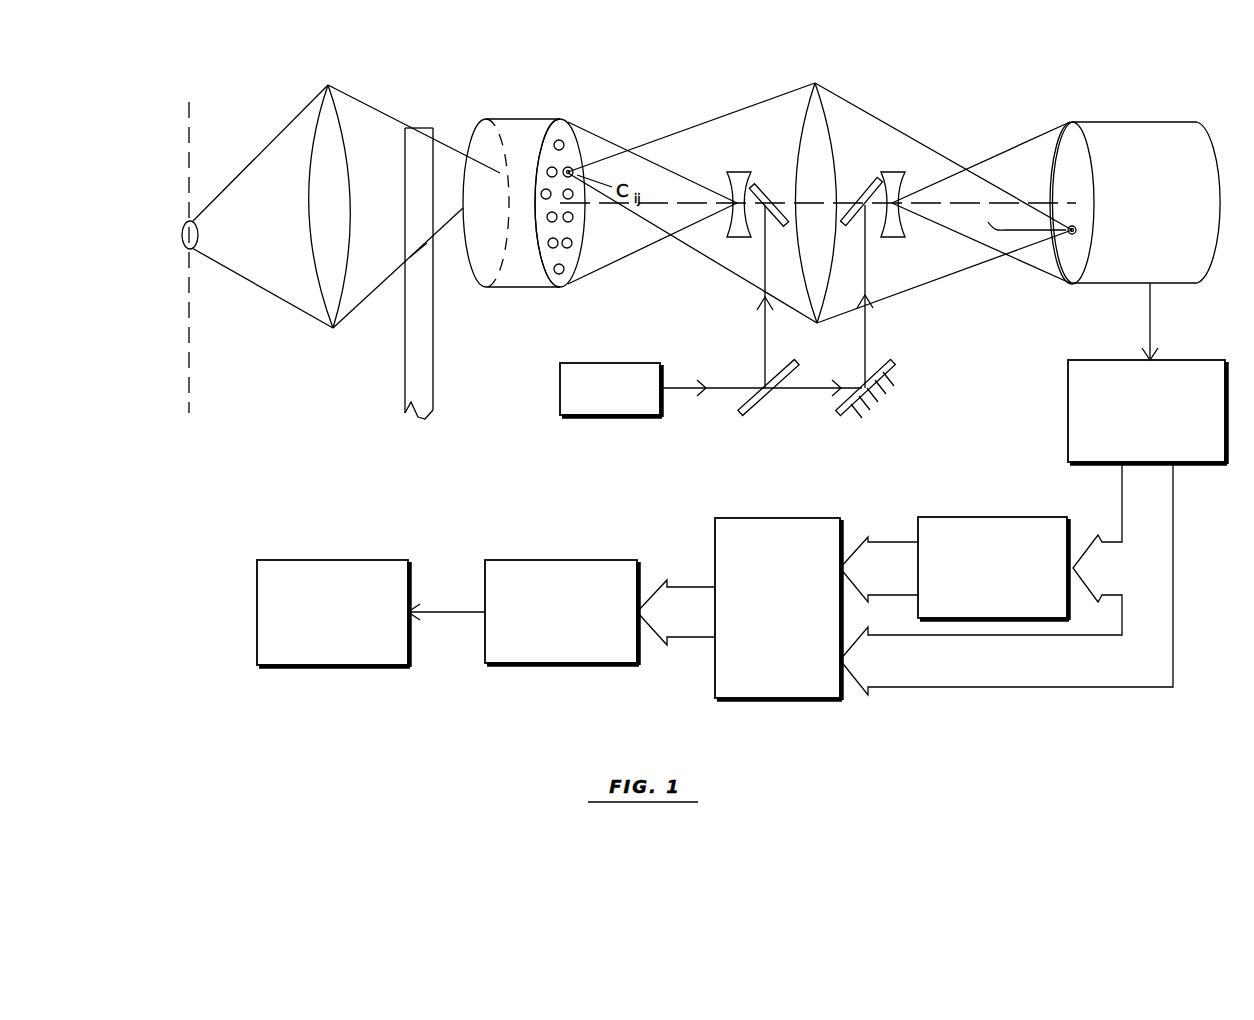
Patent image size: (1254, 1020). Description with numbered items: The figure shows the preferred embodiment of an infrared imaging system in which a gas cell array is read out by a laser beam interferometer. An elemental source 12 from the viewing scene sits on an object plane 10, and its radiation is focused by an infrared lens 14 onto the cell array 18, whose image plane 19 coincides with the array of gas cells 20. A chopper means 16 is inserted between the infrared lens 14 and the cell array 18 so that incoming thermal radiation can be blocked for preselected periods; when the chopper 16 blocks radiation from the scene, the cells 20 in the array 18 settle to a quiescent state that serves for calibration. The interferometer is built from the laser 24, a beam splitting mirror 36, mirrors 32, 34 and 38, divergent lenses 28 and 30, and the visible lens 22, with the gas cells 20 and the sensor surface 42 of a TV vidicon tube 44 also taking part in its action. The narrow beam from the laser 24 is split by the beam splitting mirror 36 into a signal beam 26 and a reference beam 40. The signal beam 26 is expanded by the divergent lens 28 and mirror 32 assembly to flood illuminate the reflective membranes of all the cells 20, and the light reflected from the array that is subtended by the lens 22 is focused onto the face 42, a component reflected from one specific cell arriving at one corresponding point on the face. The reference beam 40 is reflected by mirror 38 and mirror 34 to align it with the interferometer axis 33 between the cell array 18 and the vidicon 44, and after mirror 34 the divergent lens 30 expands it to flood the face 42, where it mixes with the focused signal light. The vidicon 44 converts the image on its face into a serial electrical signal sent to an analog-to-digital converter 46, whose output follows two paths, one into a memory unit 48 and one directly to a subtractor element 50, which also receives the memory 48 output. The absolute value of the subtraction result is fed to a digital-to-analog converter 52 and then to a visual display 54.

The object plane 10 is at (190, 322).
The elemental source 12 is at (181, 235).
The infrared lens 14 is at (345, 127).
The chopper means 16 is at (435, 402).
The cell array 18 is at (510, 119).
The image plane 19 is at (472, 262).
The gas cells 20 is at (573, 171).
The visible lens 22 is at (830, 115).
The laser 24 is at (600, 415).
The signal beam 26 is at (764, 340).
The divergent lens 28 is at (738, 172).
The divergent lens 30 is at (893, 172).
The mirror 32 is at (766, 200).
The interferometer axis 33 is at (660, 203).
The mirror 34 is at (861, 200).
The beam splitting mirror 36 is at (757, 400).
The mirror 38 is at (893, 362).
The reference beam 40 is at (866, 340).
The sensor surface 42 is at (1073, 265).
The TV vidicon tube 44 is at (1155, 122).
The analog-to-digital converter 46 is at (1177, 360).
The memory unit 48 is at (975, 517).
The subtractor element 50 is at (755, 518).
The digital-to-analog converter 52 is at (545, 560).
The visual display 54 is at (310, 560).